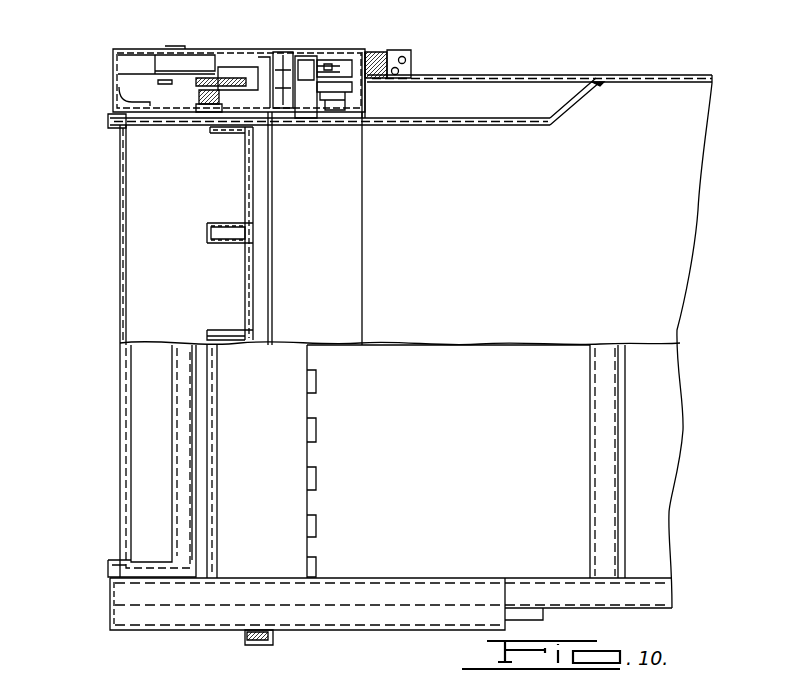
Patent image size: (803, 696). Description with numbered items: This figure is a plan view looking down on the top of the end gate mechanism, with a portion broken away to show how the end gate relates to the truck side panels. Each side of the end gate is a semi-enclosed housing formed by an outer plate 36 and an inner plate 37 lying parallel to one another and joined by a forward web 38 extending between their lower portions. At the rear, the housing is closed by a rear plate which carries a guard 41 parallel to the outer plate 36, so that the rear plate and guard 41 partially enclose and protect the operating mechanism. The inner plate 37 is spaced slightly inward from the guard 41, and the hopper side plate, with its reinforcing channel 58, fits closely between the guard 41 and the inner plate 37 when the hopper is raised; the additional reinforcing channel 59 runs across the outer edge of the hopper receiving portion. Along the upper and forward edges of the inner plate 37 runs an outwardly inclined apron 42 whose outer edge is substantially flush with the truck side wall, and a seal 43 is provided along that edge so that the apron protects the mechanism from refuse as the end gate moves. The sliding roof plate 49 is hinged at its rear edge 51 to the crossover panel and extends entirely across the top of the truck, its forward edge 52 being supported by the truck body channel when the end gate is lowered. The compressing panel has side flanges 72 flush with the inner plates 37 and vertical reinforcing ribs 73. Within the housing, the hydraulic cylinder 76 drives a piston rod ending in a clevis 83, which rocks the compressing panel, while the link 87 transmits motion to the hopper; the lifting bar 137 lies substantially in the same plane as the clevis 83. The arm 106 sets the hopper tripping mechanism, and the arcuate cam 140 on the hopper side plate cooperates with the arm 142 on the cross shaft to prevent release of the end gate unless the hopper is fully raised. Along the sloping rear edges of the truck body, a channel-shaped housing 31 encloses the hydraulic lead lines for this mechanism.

The channel-shaped housing 31 is at (410, 58).
The outer plate 36 is at (200, 52).
The inner plate 37 is at (293, 113).
The forward web 38 is at (377, 55).
The guard 41 is at (122, 87).
The apron 42 is at (573, 107).
The seal 43 is at (604, 84).
The sliding roof plate 49 is at (460, 408).
The rear edge 51 is at (318, 480).
The forward edge 52 is at (598, 426).
The reinforcing channel 58 is at (110, 118).
The reinforcing channel 59 is at (175, 493).
The side flange 72 is at (232, 133).
The reinforcing rib 73 is at (216, 222).
The hydraulic cylinder 76 is at (337, 70).
The clevis 83 is at (306, 70).
The link 87 is at (224, 96).
The arm 106 is at (252, 646).
The end gate lifting bar 137 is at (192, 73).
The arcuate cam 140 is at (268, 118).
The arm 142 is at (347, 90).